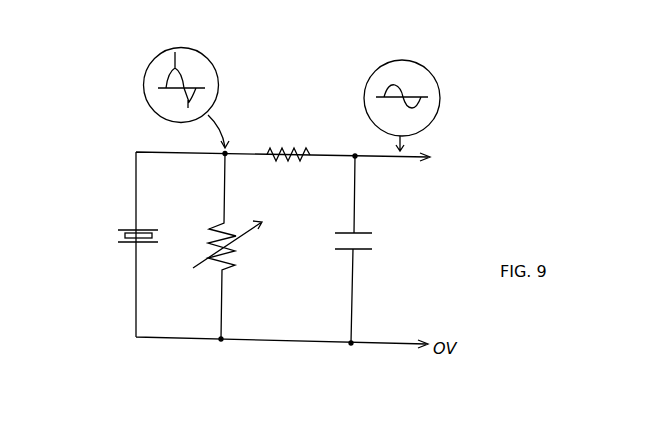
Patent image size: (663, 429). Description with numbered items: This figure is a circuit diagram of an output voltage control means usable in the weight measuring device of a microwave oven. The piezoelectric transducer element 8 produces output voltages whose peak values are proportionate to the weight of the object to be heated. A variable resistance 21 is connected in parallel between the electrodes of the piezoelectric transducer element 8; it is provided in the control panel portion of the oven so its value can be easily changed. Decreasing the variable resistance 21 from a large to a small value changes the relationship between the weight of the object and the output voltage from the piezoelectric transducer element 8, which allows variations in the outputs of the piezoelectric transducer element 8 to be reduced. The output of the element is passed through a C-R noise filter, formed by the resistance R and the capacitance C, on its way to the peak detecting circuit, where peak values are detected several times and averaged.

The piezoelectric transducer element 8 is at (133, 248).
The variable resistance 21 is at (202, 280).
The resistance R is at (288, 142).
The capacitance C is at (364, 249).